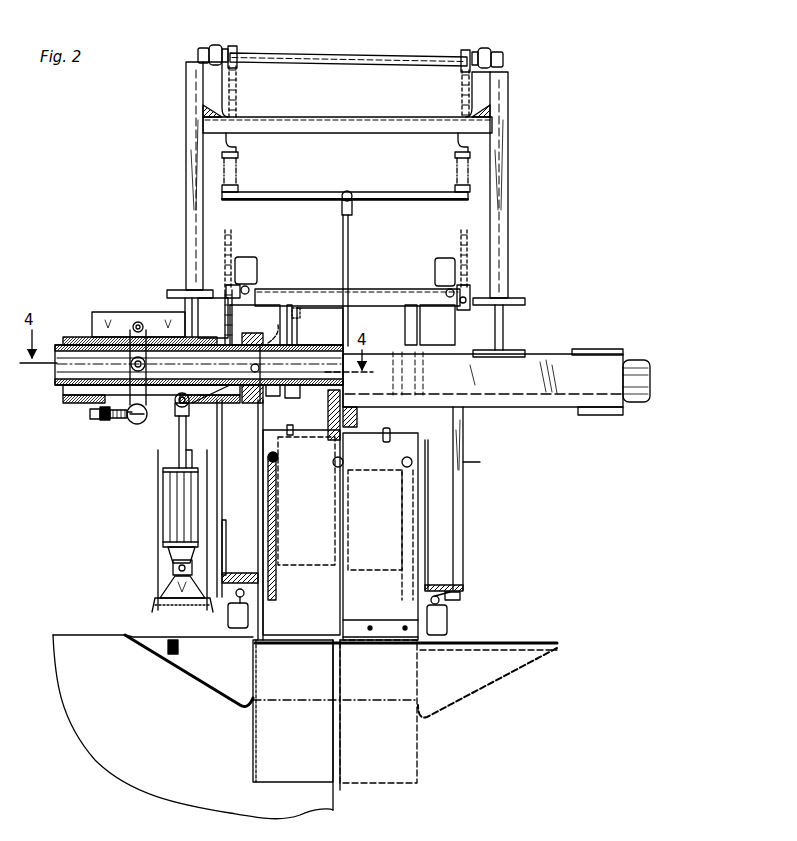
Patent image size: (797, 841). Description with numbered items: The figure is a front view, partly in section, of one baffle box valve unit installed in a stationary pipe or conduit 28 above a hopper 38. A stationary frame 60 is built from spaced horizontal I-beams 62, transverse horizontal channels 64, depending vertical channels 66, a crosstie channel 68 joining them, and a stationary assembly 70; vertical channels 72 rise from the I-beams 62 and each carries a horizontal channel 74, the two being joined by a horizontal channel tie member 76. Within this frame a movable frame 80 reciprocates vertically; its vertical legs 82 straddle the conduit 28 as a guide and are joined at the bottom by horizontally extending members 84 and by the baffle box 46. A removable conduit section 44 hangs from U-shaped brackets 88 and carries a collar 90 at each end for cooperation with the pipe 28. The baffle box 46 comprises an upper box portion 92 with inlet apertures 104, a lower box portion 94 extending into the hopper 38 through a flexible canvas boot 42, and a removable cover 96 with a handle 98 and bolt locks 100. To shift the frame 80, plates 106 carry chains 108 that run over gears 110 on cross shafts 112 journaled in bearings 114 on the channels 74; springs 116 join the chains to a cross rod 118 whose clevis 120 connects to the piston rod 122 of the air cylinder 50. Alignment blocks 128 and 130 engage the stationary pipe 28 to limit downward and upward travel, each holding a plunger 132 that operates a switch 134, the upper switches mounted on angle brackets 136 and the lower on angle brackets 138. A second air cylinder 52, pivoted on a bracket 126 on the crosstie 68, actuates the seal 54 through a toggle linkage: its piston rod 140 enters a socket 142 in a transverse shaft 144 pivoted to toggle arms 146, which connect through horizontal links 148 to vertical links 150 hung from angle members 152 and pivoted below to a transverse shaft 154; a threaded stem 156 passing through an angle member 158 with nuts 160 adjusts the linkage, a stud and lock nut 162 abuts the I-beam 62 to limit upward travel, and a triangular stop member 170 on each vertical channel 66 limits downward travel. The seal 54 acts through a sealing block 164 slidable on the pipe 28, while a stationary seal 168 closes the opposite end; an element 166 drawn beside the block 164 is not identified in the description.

The conduit line 28 is at (57, 378).
The hopper 38 is at (72, 632).
The boot 42 is at (190, 680).
The removable conduit section 44 is at (293, 390).
The baffle box 46 is at (430, 510).
The motor unit or air cylinder 50 is at (358, 413).
The second motor unit or air cylinder 52 is at (180, 508).
The seal 54 is at (252, 334).
The stationary frame 60 is at (510, 292).
The horizontal I-beams 62 is at (172, 291).
The transverse horizontal channels 64 is at (518, 408).
The depending vertical channels 66 is at (158, 532).
The crosstie channel 68 is at (155, 603).
The stationary assembly 70 is at (83, 335).
The vertical channels 72 is at (186, 210).
The horizontal channel 74 is at (203, 110).
The horizontal channel tie member 76 is at (328, 117).
The movable frame 80 is at (465, 540).
The vertical legs 82 is at (223, 490).
The horizontally extending members 84 is at (246, 574).
The U-shaped brackets 88 is at (292, 332).
The collar 90 is at (264, 345).
The upper rectangular box portion 92 is at (420, 488).
The lower rectangular box portion 94 is at (252, 757).
The removable cover 96 is at (330, 436).
The handle 98 is at (360, 434).
The bolt locks 100 is at (290, 428).
The apertures 104 is at (268, 512).
The plates 106 is at (228, 292).
The chains 108 is at (233, 240).
The gears 110 is at (235, 47).
The cross shafts 112 is at (318, 52).
The bearings 114 is at (212, 46).
The springs 116 is at (240, 156).
The cross shaft or rod 118 is at (296, 192).
The clevis 120 is at (353, 213).
The piston rod 122 is at (349, 237).
The bracket 126 is at (170, 586).
The alignment blocks 128 is at (228, 312).
The alignment blocks 130 is at (218, 566).
The plunger 132 is at (228, 330).
The switch or valve 134 is at (247, 258).
The angle bracket 136 is at (258, 268).
The angle bracket 138 is at (262, 612).
The piston rod 140 is at (180, 440).
The central socket 142 is at (187, 425).
The transverse shaft 144 is at (178, 412).
The toggle arms 146 is at (190, 406).
The horizontally extending link 148 is at (138, 321).
The vertically extending link 150 is at (144, 422).
The angle members 152 is at (105, 312).
The transverse shaft 154 is at (128, 421).
The threaded stem 156 is at (122, 419).
The angle member 158 is at (88, 406).
The nuts 160 is at (102, 421).
The stud and lock nut 162 is at (147, 330).
The sealing collar or block 164 is at (252, 404).
The bracket 166 is at (272, 398).
The stationary seal 168 is at (440, 367).
The stop member 170 is at (195, 463).